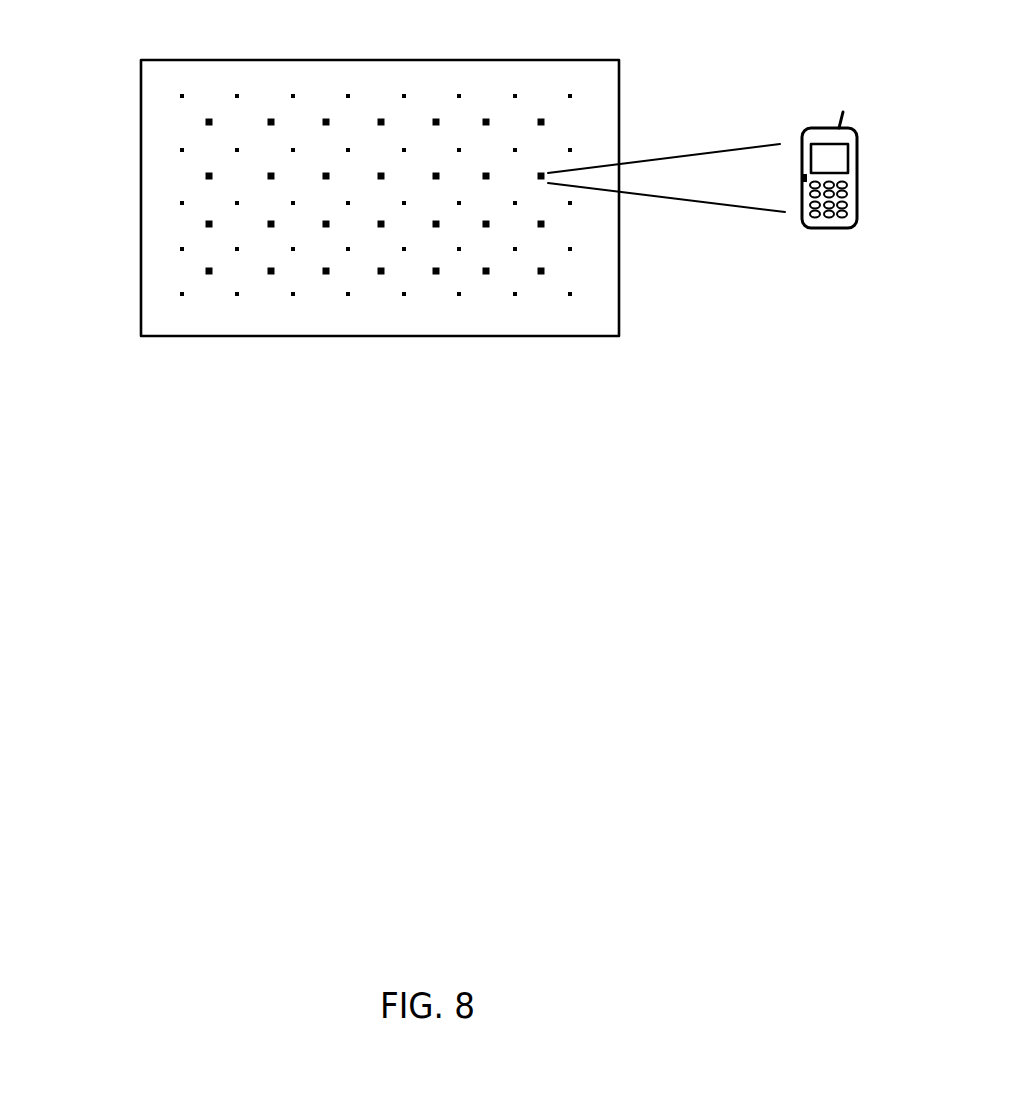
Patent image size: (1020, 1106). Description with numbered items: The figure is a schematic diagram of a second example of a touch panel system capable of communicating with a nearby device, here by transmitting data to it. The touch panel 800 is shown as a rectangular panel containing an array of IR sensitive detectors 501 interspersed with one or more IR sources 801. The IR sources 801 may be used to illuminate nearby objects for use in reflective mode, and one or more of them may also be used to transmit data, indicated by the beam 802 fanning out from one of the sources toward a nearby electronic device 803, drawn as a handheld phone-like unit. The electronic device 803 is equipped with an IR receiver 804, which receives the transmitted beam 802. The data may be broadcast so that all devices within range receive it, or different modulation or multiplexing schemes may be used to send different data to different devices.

The touch panel 800 is at (104, 118).
The array of IR sensitive detectors 501 is at (588, 95).
The IR source 801 is at (541, 279).
The beam 802 is at (695, 203).
The electronic device 803 is at (857, 158).
The IR receiver 804 is at (801, 179).